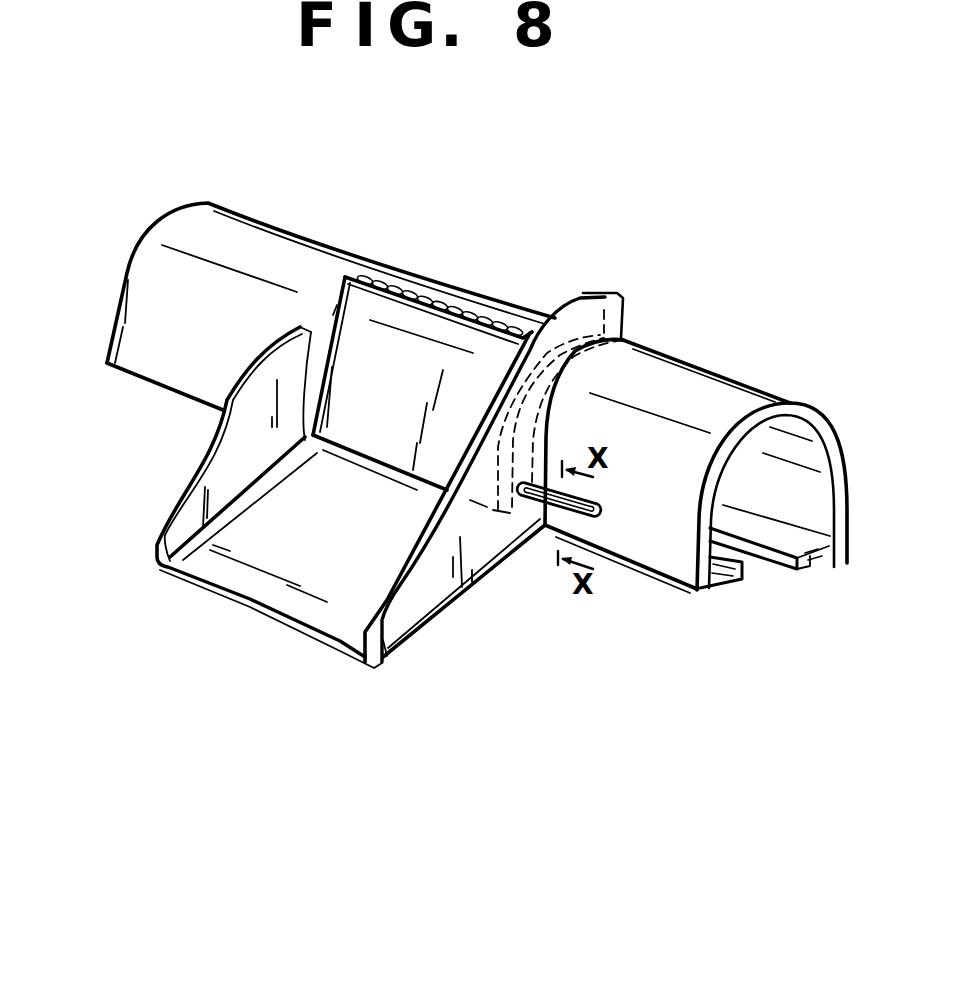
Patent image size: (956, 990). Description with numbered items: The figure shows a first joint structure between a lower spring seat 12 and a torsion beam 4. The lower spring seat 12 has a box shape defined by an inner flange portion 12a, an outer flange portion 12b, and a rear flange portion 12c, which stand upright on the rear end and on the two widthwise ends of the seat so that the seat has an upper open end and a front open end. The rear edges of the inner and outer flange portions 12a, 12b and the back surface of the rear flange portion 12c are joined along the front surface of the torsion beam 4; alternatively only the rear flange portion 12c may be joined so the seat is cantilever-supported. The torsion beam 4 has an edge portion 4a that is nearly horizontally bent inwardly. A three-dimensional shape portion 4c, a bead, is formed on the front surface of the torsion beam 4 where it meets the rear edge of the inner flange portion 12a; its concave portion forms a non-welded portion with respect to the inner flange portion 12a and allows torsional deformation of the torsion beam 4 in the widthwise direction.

The torsion beam 4 is at (297, 238).
The edge portion 4a is at (808, 568).
The three-dimensional shape portion 4c is at (594, 509).
The lower spring seat 12 is at (486, 581).
The inner flange portion 12a is at (403, 621).
The outer flange portion 12b is at (193, 520).
The rear flange portion 12c is at (623, 303).